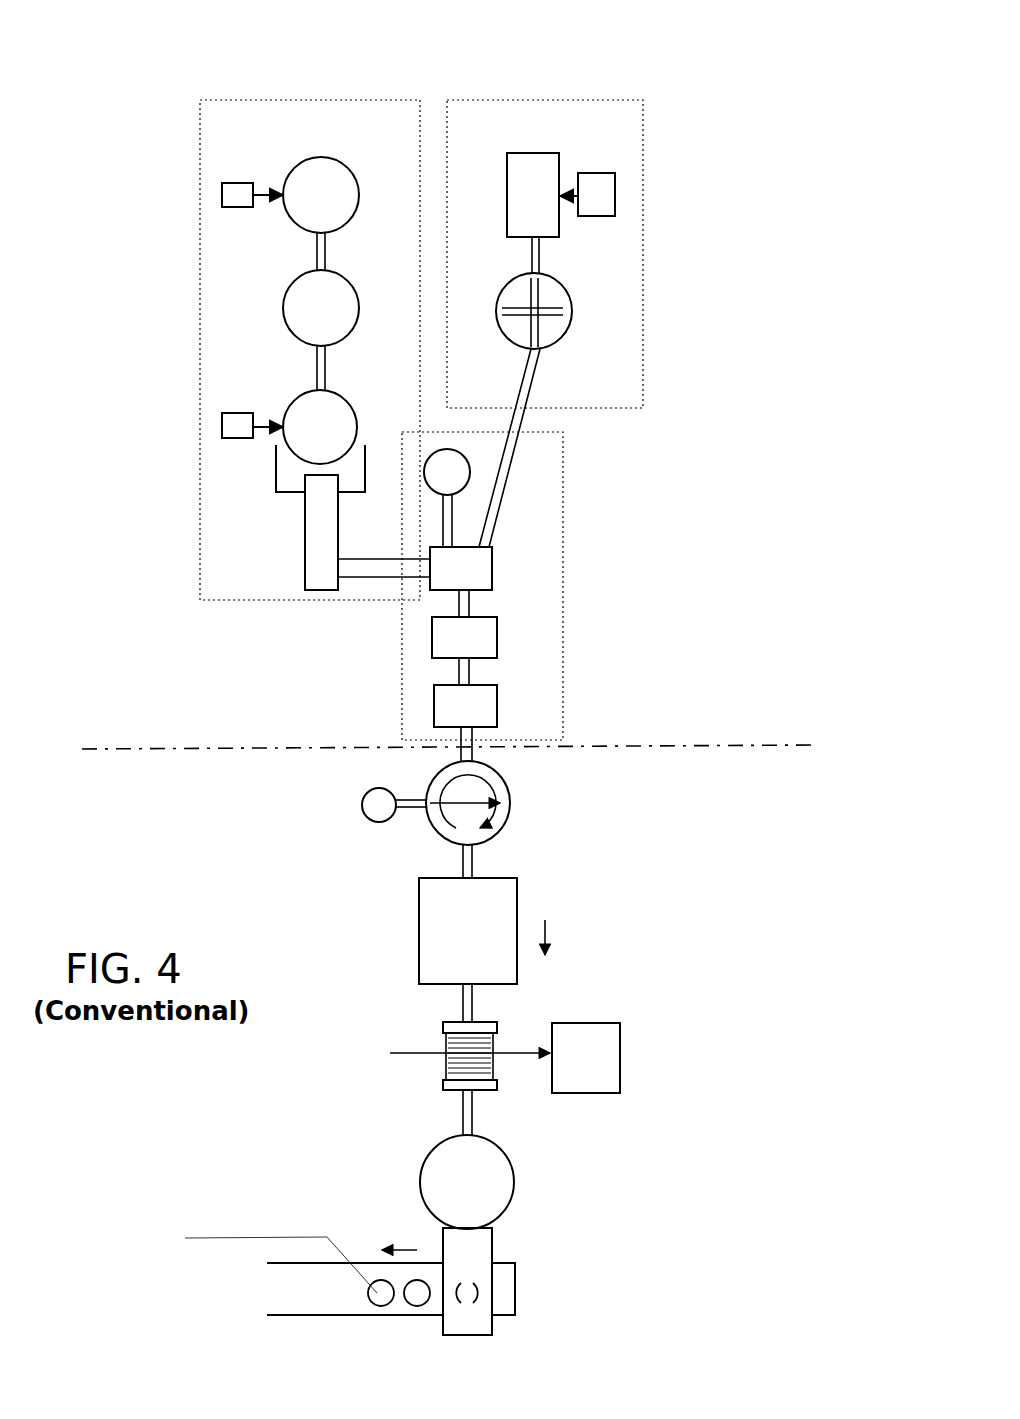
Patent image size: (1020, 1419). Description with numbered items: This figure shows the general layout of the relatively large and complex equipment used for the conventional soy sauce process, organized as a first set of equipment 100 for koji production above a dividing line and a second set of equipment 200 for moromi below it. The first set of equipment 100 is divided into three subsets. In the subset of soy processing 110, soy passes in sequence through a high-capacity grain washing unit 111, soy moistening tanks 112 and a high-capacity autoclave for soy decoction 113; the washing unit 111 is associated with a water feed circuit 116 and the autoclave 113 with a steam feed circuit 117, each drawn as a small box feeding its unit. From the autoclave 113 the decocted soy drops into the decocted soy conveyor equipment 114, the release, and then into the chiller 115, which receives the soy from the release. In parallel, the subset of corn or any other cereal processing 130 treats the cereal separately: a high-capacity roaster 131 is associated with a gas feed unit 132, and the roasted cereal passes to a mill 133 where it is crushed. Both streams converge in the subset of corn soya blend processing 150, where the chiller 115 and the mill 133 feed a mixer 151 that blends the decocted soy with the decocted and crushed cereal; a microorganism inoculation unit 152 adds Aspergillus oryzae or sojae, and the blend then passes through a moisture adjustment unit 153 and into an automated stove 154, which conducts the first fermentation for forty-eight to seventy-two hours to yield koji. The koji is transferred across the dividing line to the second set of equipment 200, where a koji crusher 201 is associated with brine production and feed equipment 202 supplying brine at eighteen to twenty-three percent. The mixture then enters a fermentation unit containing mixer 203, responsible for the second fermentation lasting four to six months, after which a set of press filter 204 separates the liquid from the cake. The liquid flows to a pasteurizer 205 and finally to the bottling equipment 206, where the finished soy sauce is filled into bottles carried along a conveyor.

The first set of equipment 100 is at (717, 731).
The subset of soy processing 110 is at (267, 139).
The high-capacity grain washing unit 111 is at (321, 213).
The soy moistening tanks 112 is at (321, 330).
The high-capacity autoclave for soy decoction 113 is at (320, 427).
The decocted soy conveyor equipment 114 is at (297, 474).
The chiller 115 is at (322, 533).
The water feed circuit 116 is at (252, 210).
The steam feed circuit 117 is at (252, 411).
The subset of corn or any other cereal processing 130 is at (502, 139).
The high-capacity roaster 131 is at (533, 213).
The gas feed unit 132 is at (592, 179).
The mill 133 is at (552, 328).
The subset of corn soya blend processing 150 is at (550, 701).
The mixer 151 is at (461, 582).
The microorganism inoculation unit 152 is at (447, 498).
The moisture adjustment unit 153 is at (464, 651).
The automated stove 154 is at (465, 723).
The second set of equipment 200 is at (720, 791).
The koji crusher 201 is at (492, 778).
The brine production and feed equipment 202 is at (378, 808).
The fermentation unit containing mixer 203 is at (482, 950).
The set of press filter 204 is at (474, 1078).
The pasteurizer 205 is at (467, 1235).
The bottling equipment 206 is at (350, 1264).